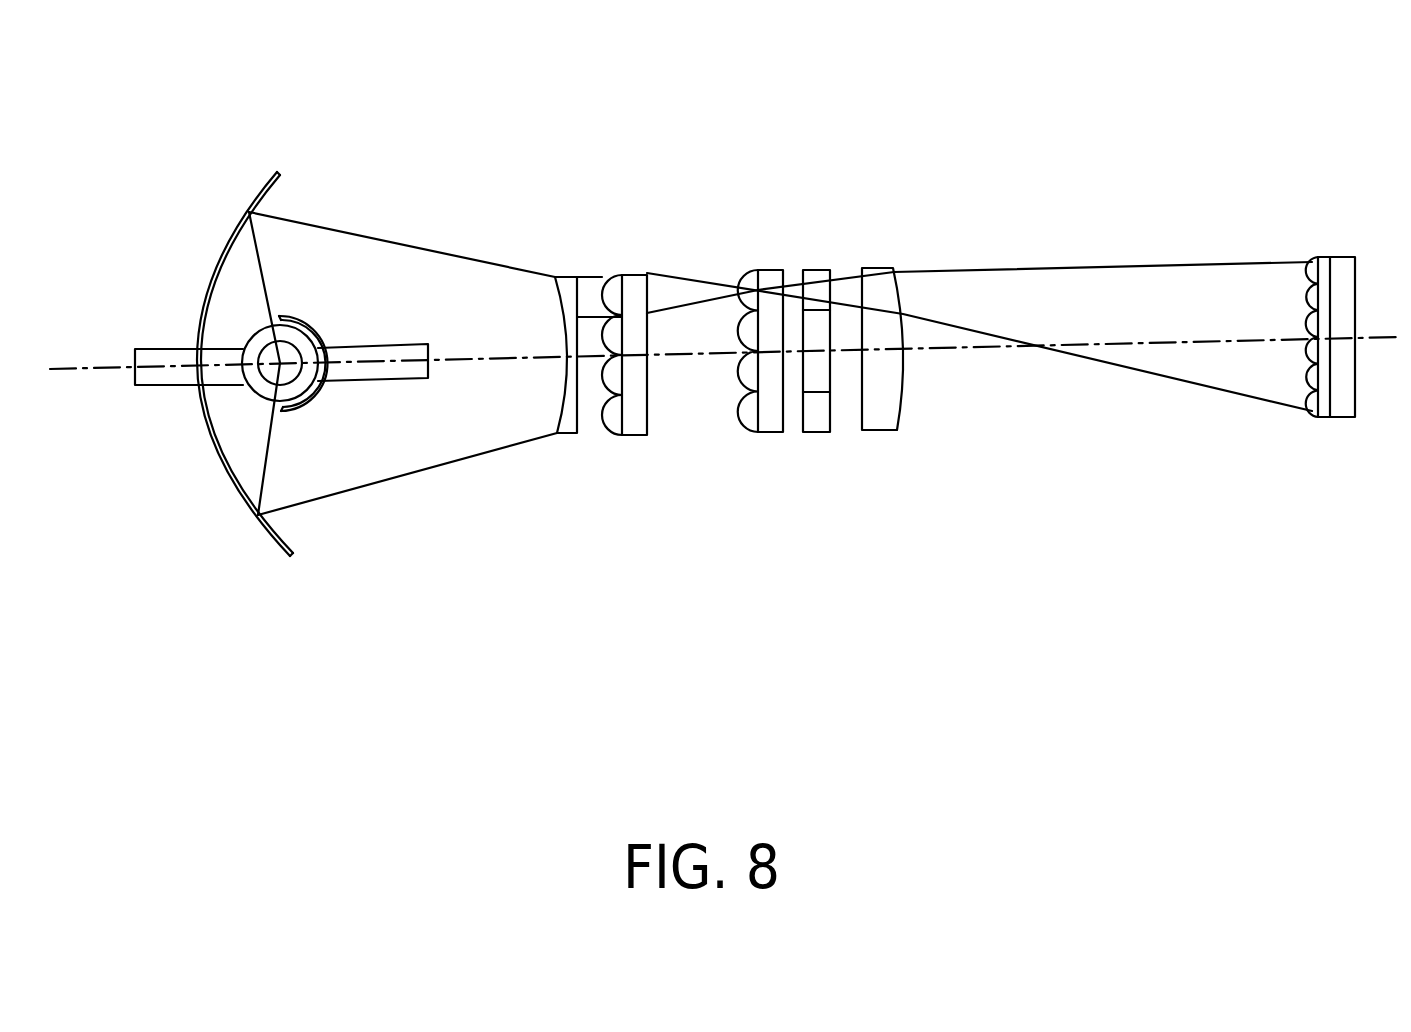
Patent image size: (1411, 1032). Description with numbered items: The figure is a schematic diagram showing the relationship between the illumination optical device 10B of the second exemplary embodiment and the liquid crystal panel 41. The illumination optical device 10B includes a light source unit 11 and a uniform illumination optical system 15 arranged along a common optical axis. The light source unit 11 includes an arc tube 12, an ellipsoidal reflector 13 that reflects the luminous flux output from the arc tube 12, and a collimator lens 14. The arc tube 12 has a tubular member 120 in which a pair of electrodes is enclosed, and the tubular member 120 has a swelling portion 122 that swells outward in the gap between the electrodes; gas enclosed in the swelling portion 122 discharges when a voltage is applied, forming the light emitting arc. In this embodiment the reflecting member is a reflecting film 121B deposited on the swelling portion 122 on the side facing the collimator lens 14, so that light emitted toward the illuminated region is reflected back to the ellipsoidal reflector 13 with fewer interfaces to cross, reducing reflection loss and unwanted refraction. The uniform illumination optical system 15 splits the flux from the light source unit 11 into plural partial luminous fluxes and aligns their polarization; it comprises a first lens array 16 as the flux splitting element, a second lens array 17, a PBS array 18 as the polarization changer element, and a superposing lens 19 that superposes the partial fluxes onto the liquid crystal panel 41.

The illumination optical device 10B is at (472, 160).
The light source unit 11 is at (497, 606).
The arc tube 12 is at (360, 383).
The tubular member 120 is at (430, 360).
The reflecting film 121B is at (290, 322).
The swelling portion 122 is at (258, 335).
The ellipsoidal reflector 13 is at (266, 541).
The collimator lens 14 is at (568, 438).
The uniform illumination optical system 15 is at (878, 508).
The first lens array 16 is at (640, 437).
The second lens array 17 is at (770, 433).
The PBS array 18 is at (817, 433).
The superposing lens 19 is at (880, 431).
The liquid crystal panel 41 is at (1337, 263).